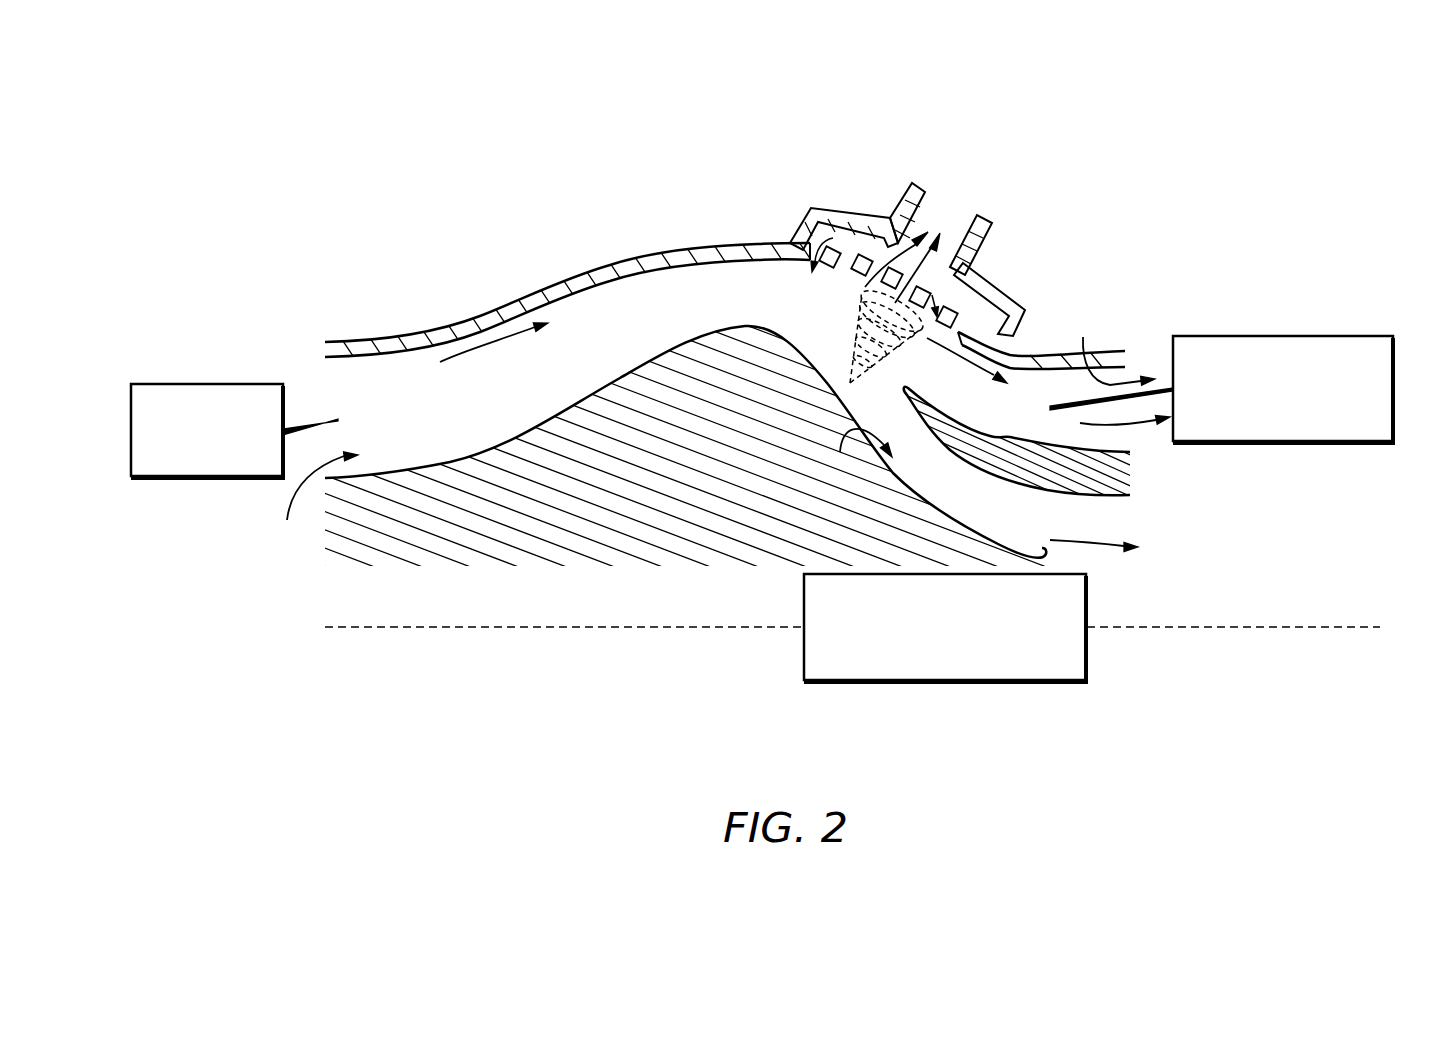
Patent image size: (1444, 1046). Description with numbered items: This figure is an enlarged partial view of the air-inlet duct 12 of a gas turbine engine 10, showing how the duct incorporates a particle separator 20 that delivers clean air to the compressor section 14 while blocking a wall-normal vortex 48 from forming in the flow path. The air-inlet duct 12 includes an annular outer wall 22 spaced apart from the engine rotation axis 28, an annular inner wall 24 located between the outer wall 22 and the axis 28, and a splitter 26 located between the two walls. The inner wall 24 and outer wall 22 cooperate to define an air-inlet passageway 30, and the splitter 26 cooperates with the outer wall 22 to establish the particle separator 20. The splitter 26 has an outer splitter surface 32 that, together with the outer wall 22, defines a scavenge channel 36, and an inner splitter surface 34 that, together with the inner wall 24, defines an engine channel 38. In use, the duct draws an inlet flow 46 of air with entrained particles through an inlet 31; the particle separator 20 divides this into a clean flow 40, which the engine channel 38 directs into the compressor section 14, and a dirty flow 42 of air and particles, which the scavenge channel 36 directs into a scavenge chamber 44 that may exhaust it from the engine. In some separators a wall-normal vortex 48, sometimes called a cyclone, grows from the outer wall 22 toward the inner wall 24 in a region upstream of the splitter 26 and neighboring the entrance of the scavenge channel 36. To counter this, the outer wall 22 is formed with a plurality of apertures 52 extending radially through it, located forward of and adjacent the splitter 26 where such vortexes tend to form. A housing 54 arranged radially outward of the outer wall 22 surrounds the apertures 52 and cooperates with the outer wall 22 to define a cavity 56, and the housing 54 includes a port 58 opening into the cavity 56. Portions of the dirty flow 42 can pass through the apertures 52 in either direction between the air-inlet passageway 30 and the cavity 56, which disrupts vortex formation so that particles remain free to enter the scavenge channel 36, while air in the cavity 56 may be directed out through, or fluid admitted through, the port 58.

The gas turbine engine 10 is at (1138, 160).
The air-inlet duct 12 is at (1118, 228).
The compressor section 14 is at (925, 458).
The particle separator 20 is at (1037, 305).
The outer wall 22 is at (398, 340).
The inner wall 24 is at (517, 428).
The splitter 26 is at (1007, 485).
The engine rotation axis 28 is at (441, 633).
The air-inlet passageway 30 is at (316, 502).
The inlet 31 is at (207, 479).
The outer splitter surface 32 is at (958, 422).
The inner splitter surface 34 is at (920, 405).
The scavenge channel 36 is at (1113, 346).
The engine channel 38 is at (858, 456).
The clean flow 40 is at (1093, 543).
The dirty flow 42 is at (1130, 427).
The scavenge chamber 44 is at (1373, 426).
The inlet flow 46 is at (472, 347).
The wall-normal vortex 48 is at (848, 372).
The apertures 52 is at (853, 237).
The housing 54 is at (796, 192).
The cavity 56 is at (905, 240).
The port 58 is at (1012, 234).